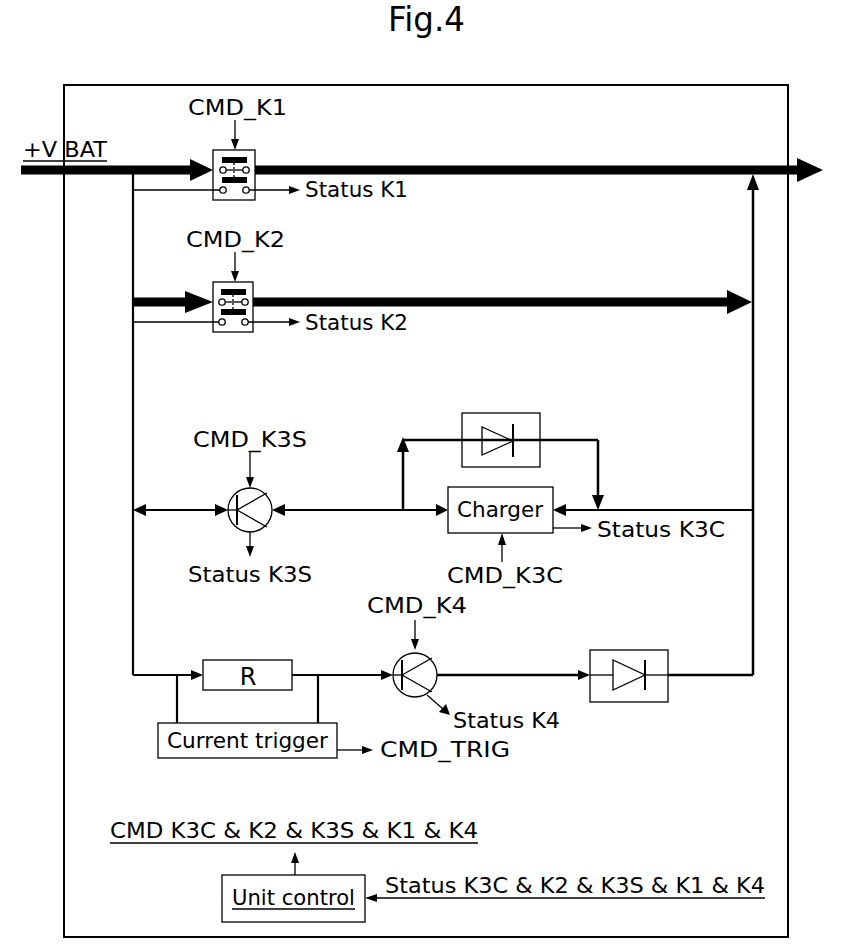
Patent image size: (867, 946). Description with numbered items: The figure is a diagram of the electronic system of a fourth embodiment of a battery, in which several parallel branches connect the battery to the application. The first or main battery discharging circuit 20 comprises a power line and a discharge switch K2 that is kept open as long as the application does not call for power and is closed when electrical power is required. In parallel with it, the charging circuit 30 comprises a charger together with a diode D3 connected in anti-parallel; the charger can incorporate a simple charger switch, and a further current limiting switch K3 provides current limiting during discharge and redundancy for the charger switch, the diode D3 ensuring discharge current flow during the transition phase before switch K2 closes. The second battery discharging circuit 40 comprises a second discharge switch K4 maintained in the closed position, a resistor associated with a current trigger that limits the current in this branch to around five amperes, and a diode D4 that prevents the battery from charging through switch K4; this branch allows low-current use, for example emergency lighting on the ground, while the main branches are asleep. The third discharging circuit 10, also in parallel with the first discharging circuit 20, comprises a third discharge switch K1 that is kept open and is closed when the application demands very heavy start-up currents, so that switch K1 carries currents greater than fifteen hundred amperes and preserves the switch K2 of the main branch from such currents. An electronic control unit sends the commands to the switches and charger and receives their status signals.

The third discharging circuit 10 is at (433, 164).
The battery discharging circuit 20 is at (433, 297).
The charging circuit 30 is at (350, 508).
The second battery discharging circuit 40 is at (517, 671).
The third discharge switch K1 is at (216, 163).
The discharge switch K2 is at (216, 294).
The current limiting switch K3 is at (224, 497).
The second discharge switch K4 is at (383, 662).
The diode D3 is at (501, 425).
The diode D4 is at (629, 693).